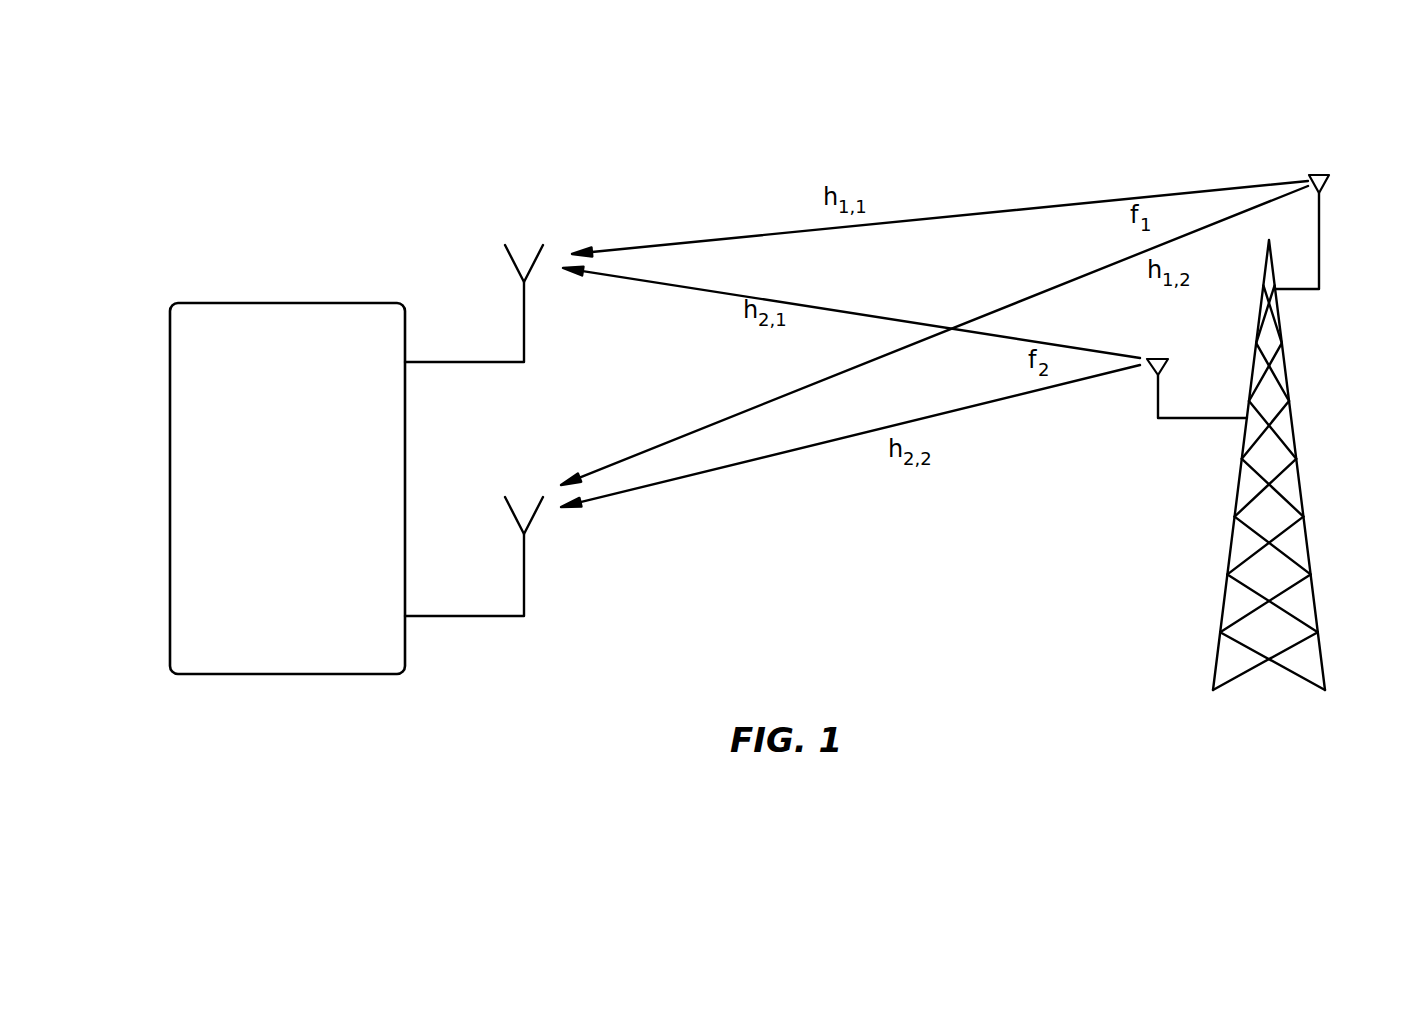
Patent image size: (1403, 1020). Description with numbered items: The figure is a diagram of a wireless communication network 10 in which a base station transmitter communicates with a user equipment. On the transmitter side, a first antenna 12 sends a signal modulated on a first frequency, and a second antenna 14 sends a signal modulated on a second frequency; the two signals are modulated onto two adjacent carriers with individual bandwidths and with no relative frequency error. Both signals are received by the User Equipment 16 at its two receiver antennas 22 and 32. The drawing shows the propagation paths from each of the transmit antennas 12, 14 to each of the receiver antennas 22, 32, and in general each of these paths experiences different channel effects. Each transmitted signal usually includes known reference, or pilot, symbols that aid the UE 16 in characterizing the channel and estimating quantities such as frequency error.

The wireless communication network 10 is at (505, 76).
The first antenna 12 is at (1322, 172).
The second antenna 14 is at (1151, 372).
The User Equipment 16 is at (287, 488).
The antenna 22 is at (508, 249).
The antenna 32 is at (508, 501).